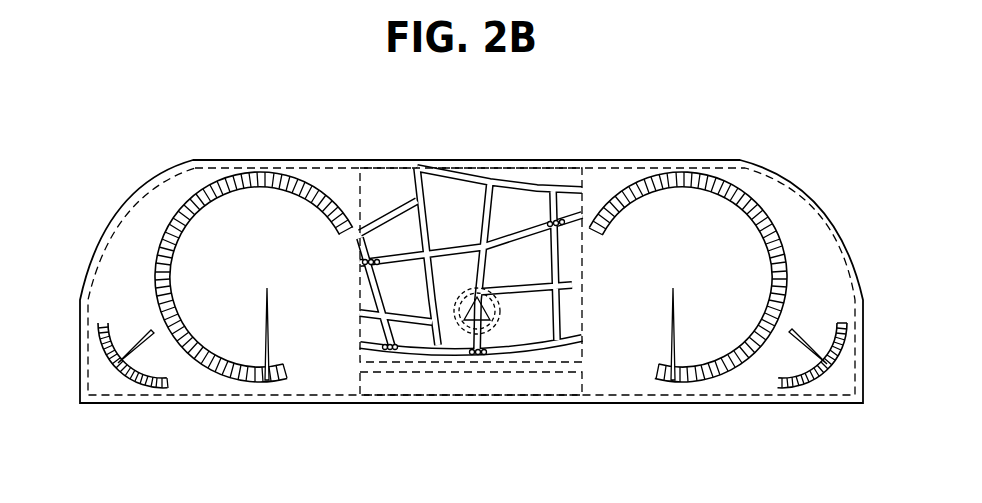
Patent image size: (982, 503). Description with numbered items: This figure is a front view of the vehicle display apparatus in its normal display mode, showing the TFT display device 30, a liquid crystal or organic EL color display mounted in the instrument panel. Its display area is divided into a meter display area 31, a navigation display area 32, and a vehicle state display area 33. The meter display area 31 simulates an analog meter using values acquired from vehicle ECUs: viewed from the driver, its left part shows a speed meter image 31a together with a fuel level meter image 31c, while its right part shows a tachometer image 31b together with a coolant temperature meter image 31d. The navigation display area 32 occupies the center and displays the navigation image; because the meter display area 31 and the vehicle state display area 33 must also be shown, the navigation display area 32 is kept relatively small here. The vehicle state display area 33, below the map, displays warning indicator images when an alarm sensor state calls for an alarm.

The TFT display device 30 is at (737, 160).
The meter display area 31 is at (471, 295).
The speed meter image 31a is at (300, 357).
The tachometer image 31b is at (639, 360).
The fuel level meter image 31c is at (109, 393).
The coolant temperature meter image 31d is at (833, 392).
The navigation display area 32 is at (482, 165).
The vehicle state display area 33 is at (430, 395).